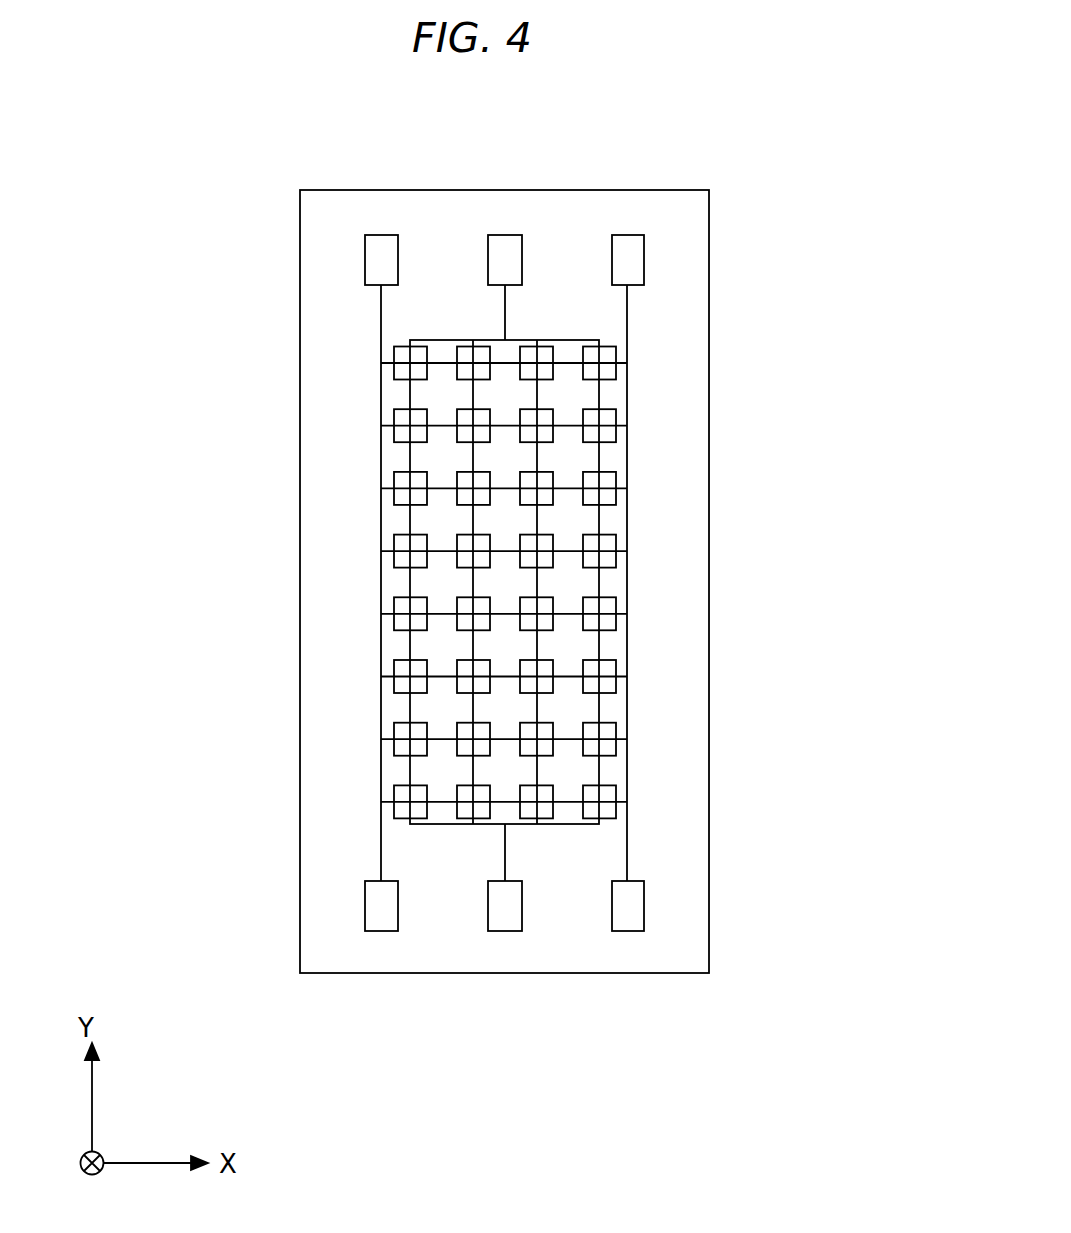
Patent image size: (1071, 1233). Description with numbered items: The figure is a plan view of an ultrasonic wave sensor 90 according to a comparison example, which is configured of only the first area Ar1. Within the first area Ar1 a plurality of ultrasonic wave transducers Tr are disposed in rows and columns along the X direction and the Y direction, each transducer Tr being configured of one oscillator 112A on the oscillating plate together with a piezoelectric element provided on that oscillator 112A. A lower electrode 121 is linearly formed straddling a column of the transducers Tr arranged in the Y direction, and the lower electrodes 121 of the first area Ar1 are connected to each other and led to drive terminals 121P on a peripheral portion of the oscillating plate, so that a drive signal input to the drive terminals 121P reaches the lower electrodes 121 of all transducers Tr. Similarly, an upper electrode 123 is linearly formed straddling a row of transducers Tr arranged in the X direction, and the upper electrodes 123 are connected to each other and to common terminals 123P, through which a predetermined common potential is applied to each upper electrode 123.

The ultrasonic wave sensor 90 is at (242, 168).
The lower electrode 121 is at (538, 645).
The upper electrode 123 is at (567, 552).
The drive terminal 121P is at (507, 933).
The common terminal 123P is at (383, 933).
The ultrasonic wave transducer Tr is at (632, 583).
The oscillator 112A is at (610, 355).
The first area Ar1 is at (667, 583).